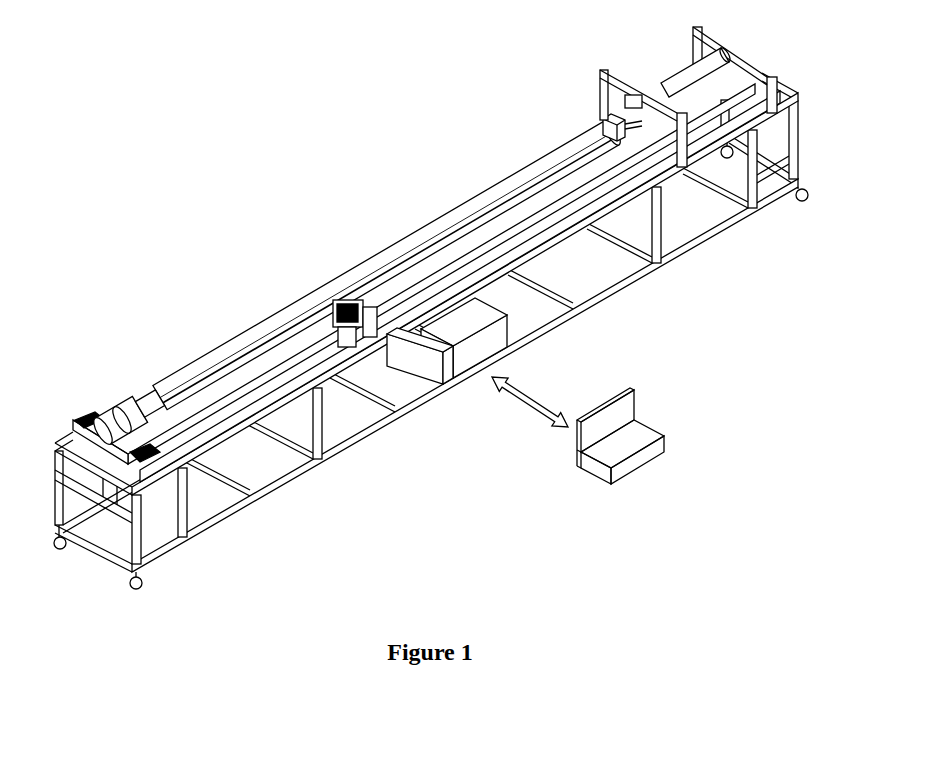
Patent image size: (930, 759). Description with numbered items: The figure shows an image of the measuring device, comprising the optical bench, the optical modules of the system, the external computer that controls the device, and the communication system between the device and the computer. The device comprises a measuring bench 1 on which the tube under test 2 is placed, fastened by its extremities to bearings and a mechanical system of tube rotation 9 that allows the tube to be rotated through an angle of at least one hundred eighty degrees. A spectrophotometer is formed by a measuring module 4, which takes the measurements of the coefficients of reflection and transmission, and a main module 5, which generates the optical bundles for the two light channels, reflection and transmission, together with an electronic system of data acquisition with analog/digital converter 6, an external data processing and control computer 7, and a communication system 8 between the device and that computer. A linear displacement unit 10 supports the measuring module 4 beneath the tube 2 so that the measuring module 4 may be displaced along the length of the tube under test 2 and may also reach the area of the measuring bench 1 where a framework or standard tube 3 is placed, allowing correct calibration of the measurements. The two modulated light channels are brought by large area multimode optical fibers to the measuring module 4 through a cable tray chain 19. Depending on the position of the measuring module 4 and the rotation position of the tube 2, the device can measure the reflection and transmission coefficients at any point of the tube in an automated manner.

The measuring bench 1 is at (733, 223).
The tube under test 2 is at (205, 372).
The framework or standard tube 3 is at (708, 80).
The measuring module 4 is at (364, 312).
The main module 5 is at (495, 346).
The electronic system of data acquisition with analog/digital converter 6 is at (433, 371).
The data processing and control computer 7 is at (620, 453).
The communication system 8 is at (533, 412).
The mechanical system of tube rotation 9 is at (118, 405).
The linear displacement unit 10 is at (200, 438).
The cable tray chain 19 is at (603, 238).